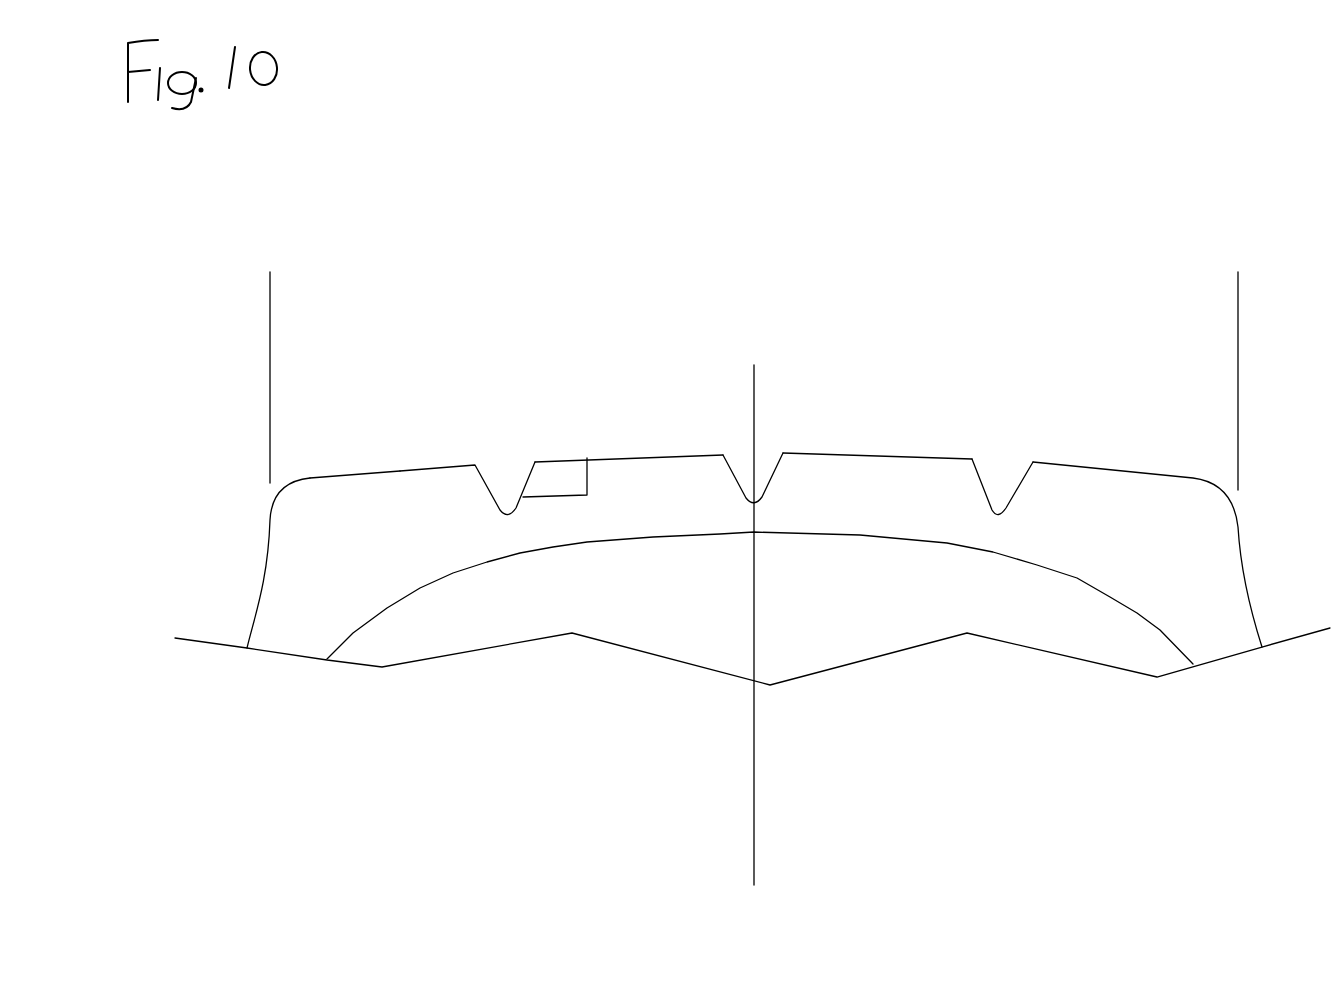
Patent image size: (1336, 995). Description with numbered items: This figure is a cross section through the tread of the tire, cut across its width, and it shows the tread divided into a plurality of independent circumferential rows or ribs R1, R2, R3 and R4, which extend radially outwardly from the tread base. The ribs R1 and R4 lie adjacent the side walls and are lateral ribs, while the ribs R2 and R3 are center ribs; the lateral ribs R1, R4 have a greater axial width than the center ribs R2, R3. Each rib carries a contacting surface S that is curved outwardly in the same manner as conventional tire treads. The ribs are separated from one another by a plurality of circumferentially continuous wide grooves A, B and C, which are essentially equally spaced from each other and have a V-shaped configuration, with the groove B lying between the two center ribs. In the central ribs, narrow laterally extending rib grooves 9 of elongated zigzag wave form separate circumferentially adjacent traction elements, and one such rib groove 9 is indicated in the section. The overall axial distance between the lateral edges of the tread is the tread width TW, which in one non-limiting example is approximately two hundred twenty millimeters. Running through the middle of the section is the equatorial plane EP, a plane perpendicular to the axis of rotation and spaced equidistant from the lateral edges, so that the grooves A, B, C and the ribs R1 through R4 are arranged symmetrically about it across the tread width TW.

The tread width TW is at (1236, 300).
The equatorial plane EP is at (758, 820).
The contacting surface S is at (345, 480).
The rib R1 is at (355, 465).
The circumferentially continuous wide groove A is at (502, 436).
The rib groove 9 is at (567, 473).
The rib R2 is at (681, 438).
The circumferentially continuous wide groove B is at (771, 441).
The rib R3 is at (903, 445).
The circumferentially continuous wide groove C is at (1016, 446).
The rib R4 is at (1138, 461).